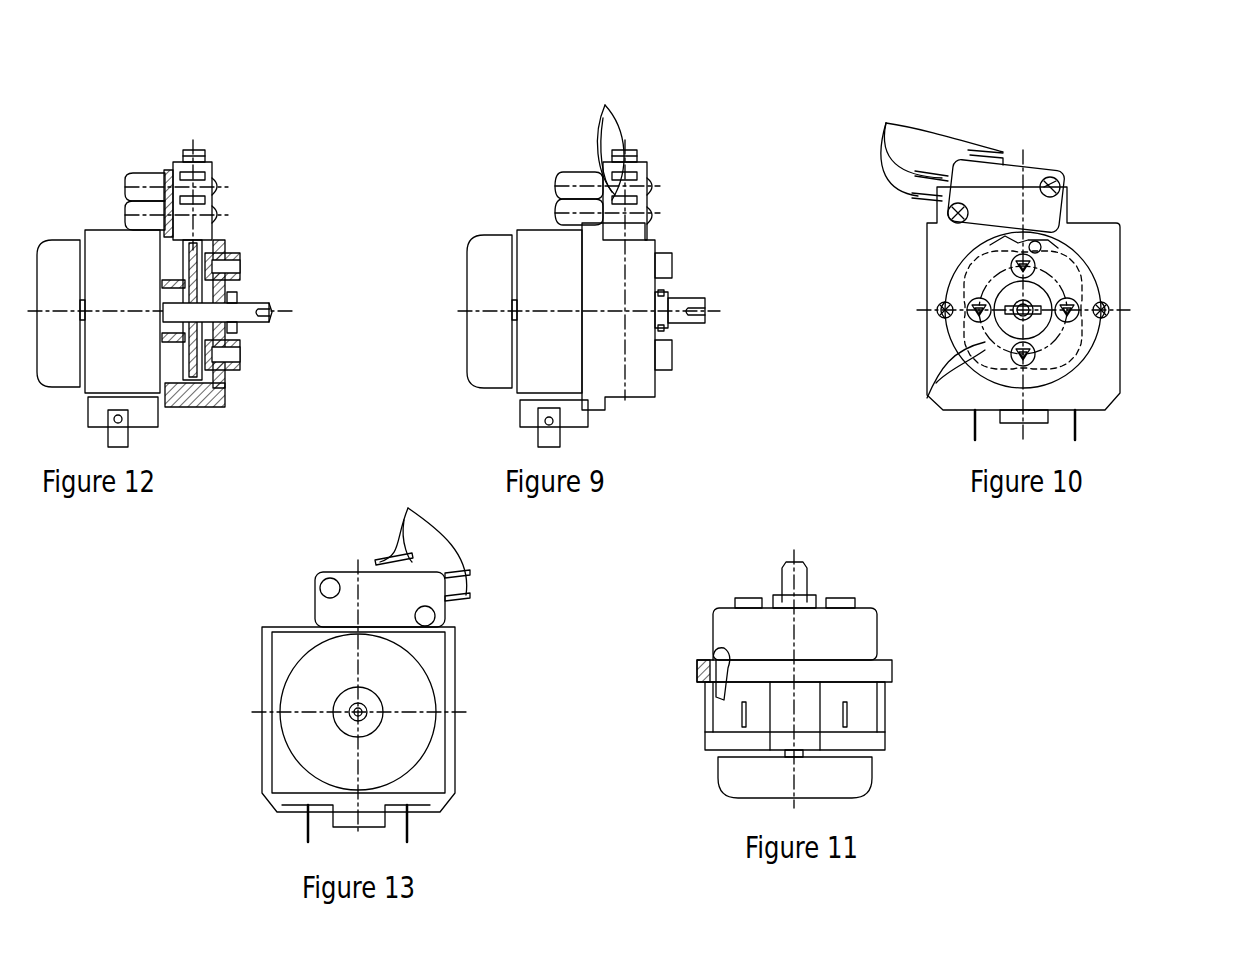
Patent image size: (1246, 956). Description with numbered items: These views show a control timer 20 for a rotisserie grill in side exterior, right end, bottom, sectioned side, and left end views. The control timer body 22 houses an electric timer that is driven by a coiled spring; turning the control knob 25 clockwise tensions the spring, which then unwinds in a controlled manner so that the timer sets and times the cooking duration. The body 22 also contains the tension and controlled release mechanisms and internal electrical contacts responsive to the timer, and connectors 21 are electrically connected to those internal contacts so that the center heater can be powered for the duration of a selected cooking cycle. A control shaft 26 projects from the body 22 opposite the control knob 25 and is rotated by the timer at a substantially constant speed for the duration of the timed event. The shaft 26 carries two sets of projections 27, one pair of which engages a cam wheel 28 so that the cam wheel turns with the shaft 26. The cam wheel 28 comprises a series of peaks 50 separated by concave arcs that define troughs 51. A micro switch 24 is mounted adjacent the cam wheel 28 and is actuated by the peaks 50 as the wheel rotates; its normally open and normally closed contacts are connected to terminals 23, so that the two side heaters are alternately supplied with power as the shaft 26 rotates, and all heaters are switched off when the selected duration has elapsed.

In FIG. 12, the control timer 20 is at (90, 153).
In FIG. 9, the control timer 20 is at (522, 178).
In FIG. 10, the control timer 20 is at (1023, 143).
In FIG. 11, the control timer 20 is at (893, 645).
In FIG. 12, the connectors 21 is at (110, 436).
In FIG. 9, the connectors 21 is at (560, 437).
In FIG. 10, the connectors 21 is at (985, 440).
In FIG. 13, the connectors 21 is at (407, 838).
In FIG. 11, the connectors 21 is at (845, 715).
In FIG. 12, the control timer body 22 is at (92, 240).
In FIG. 9, the control timer body 22 is at (594, 316).
In FIG. 10, the control timer body 22 is at (1110, 388).
In FIG. 13, the control timer body 22 is at (280, 625).
In FIG. 11, the control timer body 22 is at (877, 713).
In FIG. 9, the terminals 23 is at (607, 148).
In FIG. 10, the terminals 23 is at (926, 141).
In FIG. 13, the terminals 23 is at (392, 542).
In FIG. 12, the micro switch 24 is at (206, 166).
In FIG. 10, the micro switch 24 is at (1015, 182).
In FIG. 12, the control knob 25 is at (56, 246).
In FIG. 9, the control knob 25 is at (482, 246).
In FIG. 11, the control knob 25 is at (873, 770).
In FIG. 12, the control shaft 26 is at (237, 256).
In FIG. 9, the control shaft 26 is at (692, 323).
In FIG. 10, the control shaft 26 is at (1032, 316).
In FIG. 11, the control shaft 26 is at (800, 582).
In FIG. 12, the projections 27 is at (238, 331).
In FIG. 9, the projections 27 is at (668, 291).
In FIG. 10, the projections 27 is at (1003, 307).
In FIG. 11, the projections 27 is at (775, 598).
In FIG. 12, the cam wheel 28 is at (213, 390).
In FIG. 10, the cam wheel 28 is at (1085, 270).
In FIG. 10, the peaks 50 is at (936, 383).
In FIG. 10, the troughs 51 is at (980, 360).